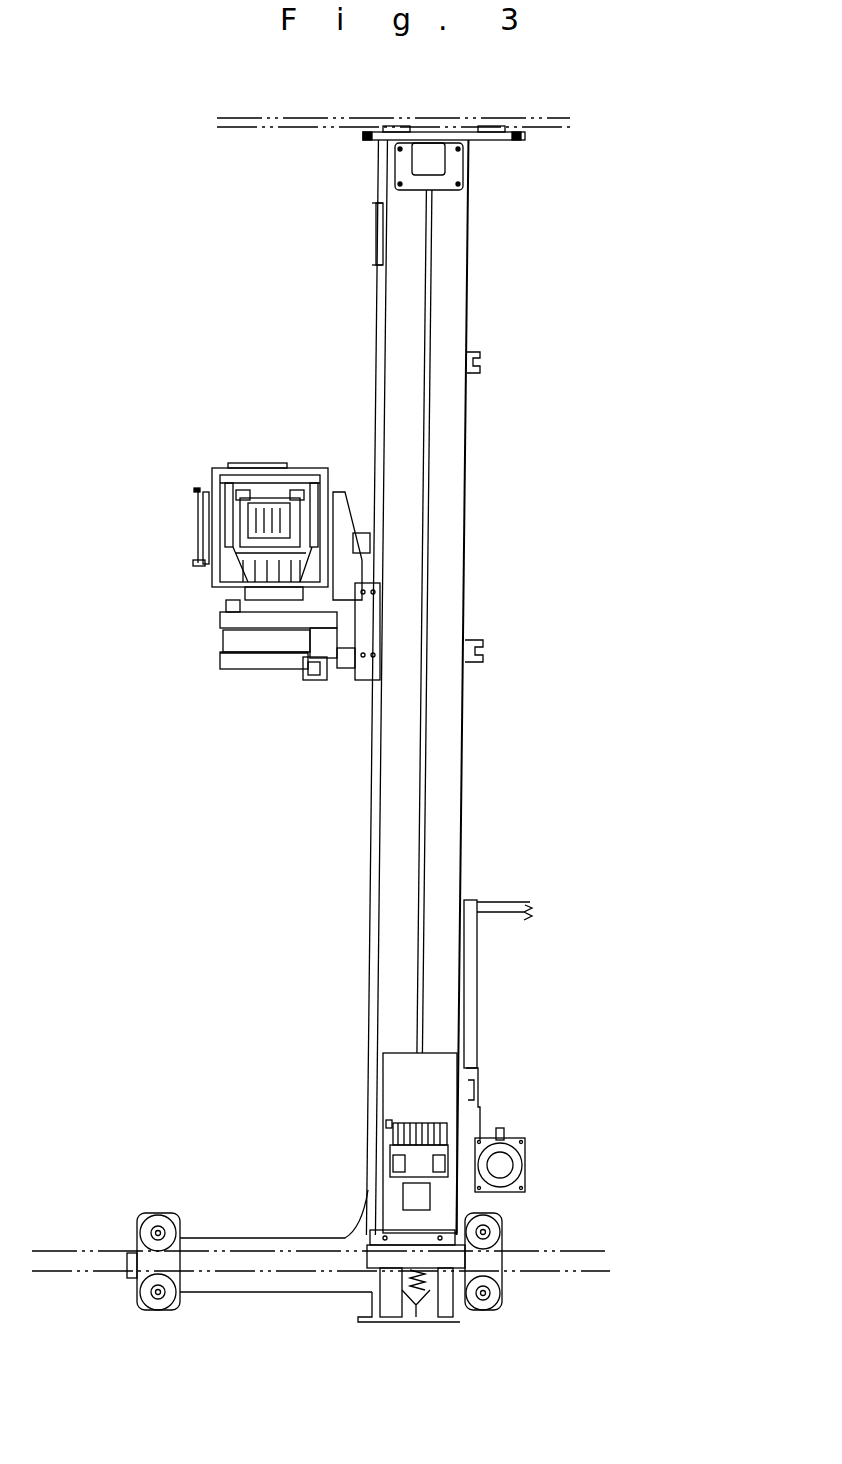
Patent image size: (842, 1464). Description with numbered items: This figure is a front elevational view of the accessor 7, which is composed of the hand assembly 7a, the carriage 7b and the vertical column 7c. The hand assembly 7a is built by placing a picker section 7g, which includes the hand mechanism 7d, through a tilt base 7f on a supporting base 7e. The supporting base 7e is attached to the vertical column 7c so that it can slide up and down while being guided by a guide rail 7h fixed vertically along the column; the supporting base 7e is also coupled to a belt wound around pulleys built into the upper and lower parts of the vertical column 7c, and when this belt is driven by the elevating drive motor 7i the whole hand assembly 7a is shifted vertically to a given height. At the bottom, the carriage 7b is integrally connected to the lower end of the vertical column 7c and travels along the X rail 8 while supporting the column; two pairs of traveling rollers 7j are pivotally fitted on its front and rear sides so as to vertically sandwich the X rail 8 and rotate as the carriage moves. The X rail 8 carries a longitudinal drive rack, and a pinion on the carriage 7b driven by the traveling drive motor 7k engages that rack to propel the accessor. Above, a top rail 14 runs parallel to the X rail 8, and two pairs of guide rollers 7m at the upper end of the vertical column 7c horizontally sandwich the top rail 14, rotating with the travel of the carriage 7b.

The accessor 7 is at (423, 687).
The hand assembly 7a is at (208, 640).
The carriage 7b is at (308, 1238).
The vertical column 7c is at (464, 775).
The hand mechanism 7d is at (277, 500).
The supporting base 7e is at (337, 603).
The tilt base 7f is at (207, 588).
The picker section 7g is at (222, 535).
The guide rail 7h is at (384, 795).
The elevating drive motor 7i is at (503, 1165).
The traveling rollers 7j is at (175, 1280).
The traveling drive motor 7k is at (413, 1155).
The guide rollers 7m is at (398, 125).
The X rail 8 is at (60, 1248).
The top rail 14 is at (246, 130).